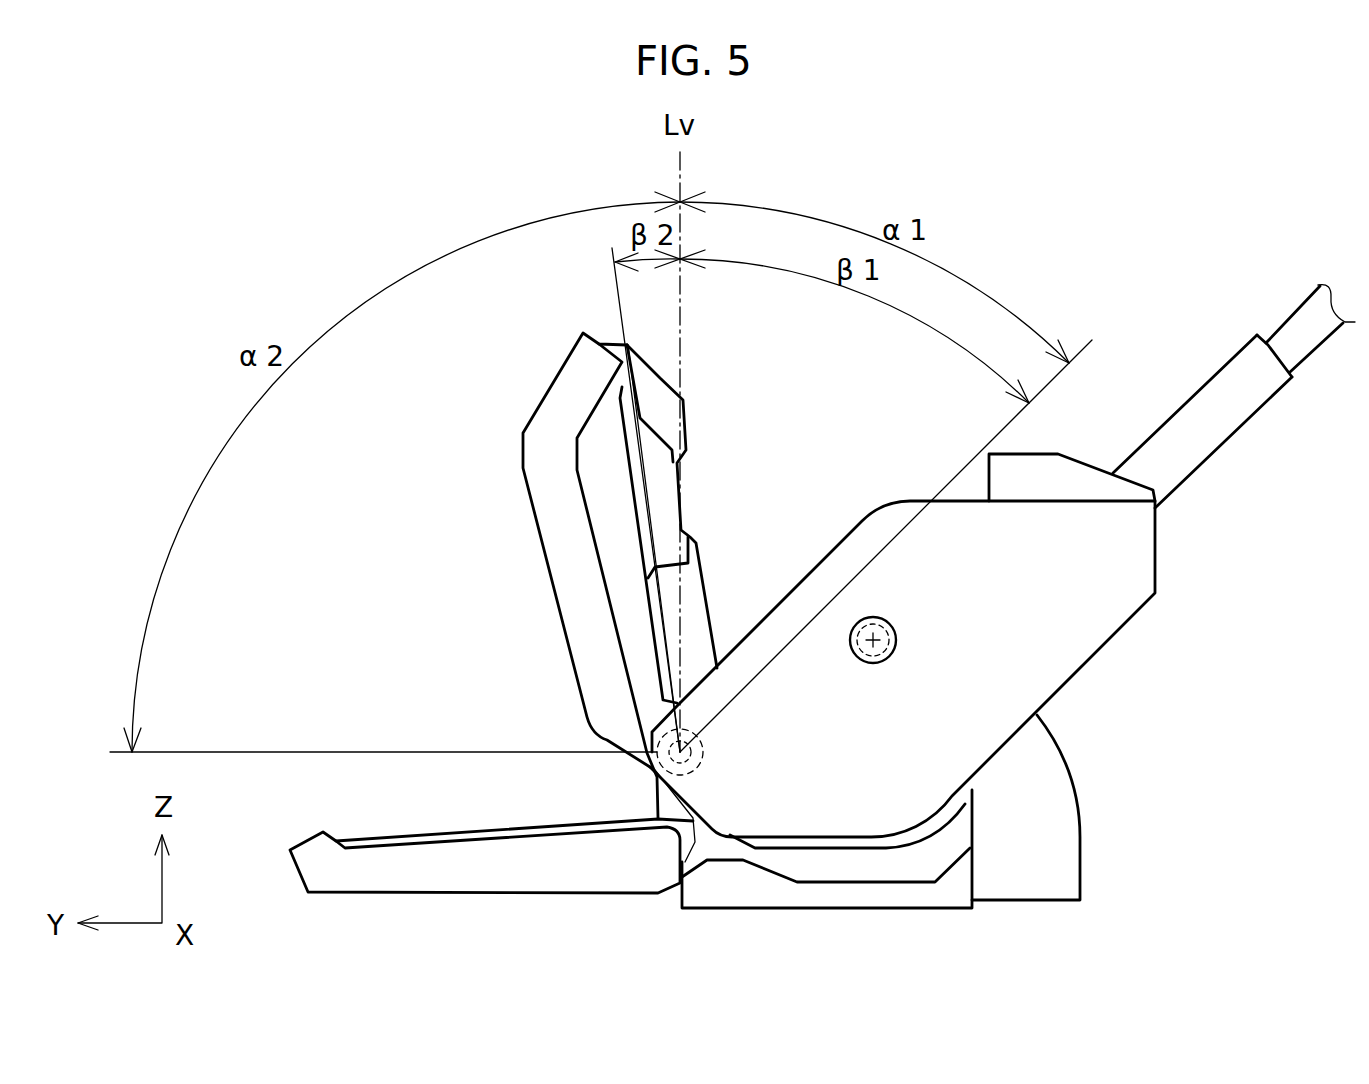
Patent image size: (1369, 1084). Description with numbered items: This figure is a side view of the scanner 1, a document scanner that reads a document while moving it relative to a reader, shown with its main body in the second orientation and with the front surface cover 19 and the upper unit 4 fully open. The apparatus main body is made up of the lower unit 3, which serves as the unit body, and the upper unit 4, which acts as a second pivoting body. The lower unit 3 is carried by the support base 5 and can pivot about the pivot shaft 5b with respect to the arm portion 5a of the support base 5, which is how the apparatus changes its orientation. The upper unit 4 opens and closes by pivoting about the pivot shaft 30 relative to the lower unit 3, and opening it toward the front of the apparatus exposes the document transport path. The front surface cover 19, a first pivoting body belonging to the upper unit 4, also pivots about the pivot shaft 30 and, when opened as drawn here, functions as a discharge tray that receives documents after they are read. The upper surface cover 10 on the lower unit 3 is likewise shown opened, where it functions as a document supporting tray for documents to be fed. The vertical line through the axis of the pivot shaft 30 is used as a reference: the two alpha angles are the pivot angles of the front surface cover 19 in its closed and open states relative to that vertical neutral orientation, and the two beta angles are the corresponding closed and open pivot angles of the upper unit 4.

The scanner 1 is at (1103, 297).
The lower unit 3 is at (1120, 590).
The upper unit 4 is at (550, 545).
The support base 5 is at (843, 900).
The arm portion 5a is at (1070, 842).
The pivot shaft 5b is at (898, 638).
The upper surface cover 10 is at (1202, 450).
The front surface cover 19 is at (379, 845).
The pivot shaft 30 is at (655, 770).